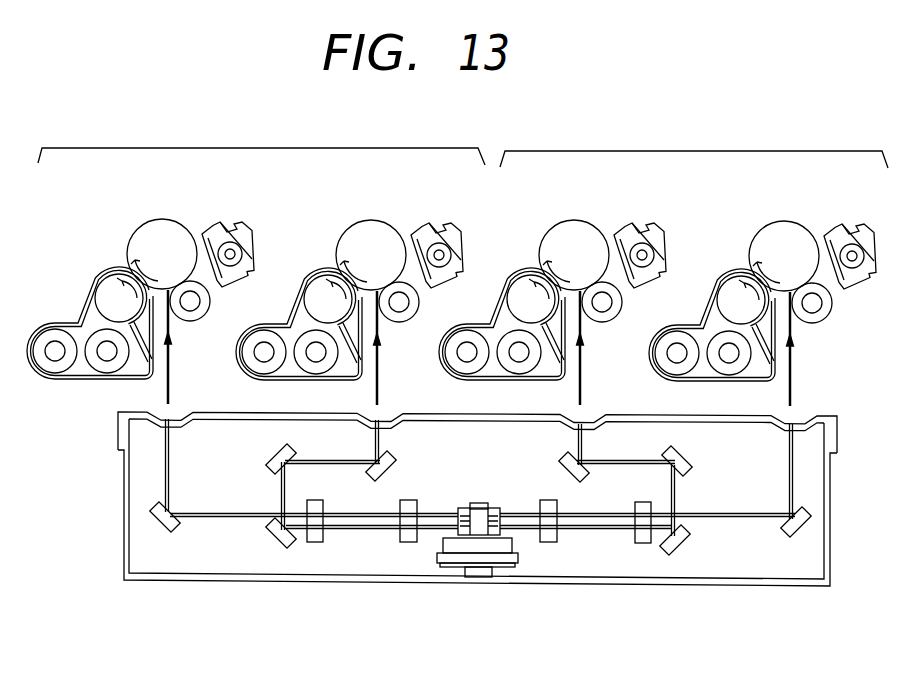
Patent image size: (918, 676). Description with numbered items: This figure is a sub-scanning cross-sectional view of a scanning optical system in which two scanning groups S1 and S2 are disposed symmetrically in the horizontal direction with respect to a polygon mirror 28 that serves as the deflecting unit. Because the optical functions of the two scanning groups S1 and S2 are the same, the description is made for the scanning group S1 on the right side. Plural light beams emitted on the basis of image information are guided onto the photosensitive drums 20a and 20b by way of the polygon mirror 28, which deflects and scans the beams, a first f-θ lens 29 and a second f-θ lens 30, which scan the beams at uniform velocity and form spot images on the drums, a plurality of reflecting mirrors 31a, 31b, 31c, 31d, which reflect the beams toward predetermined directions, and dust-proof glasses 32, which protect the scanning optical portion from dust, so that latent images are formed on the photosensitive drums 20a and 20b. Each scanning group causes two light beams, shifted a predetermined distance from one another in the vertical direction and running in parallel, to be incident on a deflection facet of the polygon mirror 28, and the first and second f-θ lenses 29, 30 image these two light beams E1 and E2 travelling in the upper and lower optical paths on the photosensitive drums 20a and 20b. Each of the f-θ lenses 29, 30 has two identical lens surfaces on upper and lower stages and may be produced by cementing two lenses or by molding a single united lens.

The photosensitive drum 20a is at (772, 240).
The photosensitive drum 20b is at (562, 236).
The polygon mirror 28 is at (491, 533).
The first f-θ lens 29 is at (540, 508).
The second f-θ lens 30 is at (642, 545).
The reflecting mirror 31a is at (808, 538).
The reflecting mirror 31b is at (678, 555).
The reflecting mirror 31c is at (690, 450).
The reflecting mirror 31d is at (565, 462).
The dust-proof glass 32 is at (817, 400).
The light beam E1 is at (797, 352).
The light beam E2 is at (584, 372).
The scanning group S1 is at (694, 145).
The scanning group S2 is at (261, 144).